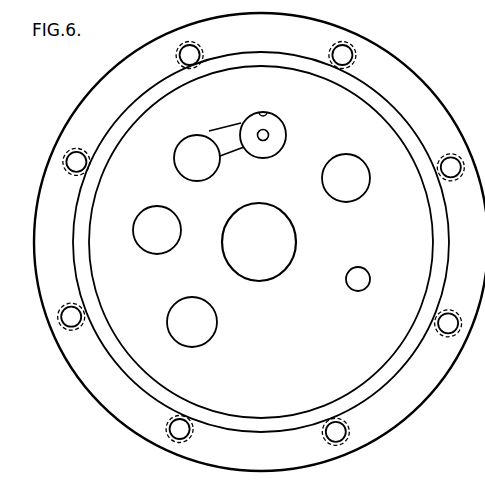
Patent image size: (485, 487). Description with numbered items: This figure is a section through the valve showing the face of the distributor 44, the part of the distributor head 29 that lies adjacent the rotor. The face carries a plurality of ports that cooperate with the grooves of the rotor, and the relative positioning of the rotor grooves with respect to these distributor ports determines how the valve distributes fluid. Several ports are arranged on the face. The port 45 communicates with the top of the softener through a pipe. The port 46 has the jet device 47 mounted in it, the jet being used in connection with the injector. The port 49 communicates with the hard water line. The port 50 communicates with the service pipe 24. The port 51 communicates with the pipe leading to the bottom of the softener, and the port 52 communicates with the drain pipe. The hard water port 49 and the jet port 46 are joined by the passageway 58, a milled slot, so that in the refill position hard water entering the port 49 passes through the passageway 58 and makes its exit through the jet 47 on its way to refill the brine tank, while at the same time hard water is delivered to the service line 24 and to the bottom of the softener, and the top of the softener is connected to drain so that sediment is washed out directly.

The distributor head 29 is at (434, 89).
The distributor 44 is at (363, 249).
The port 45 is at (363, 176).
The port 46 is at (272, 104).
The jet device 47 is at (276, 134).
The port 49 is at (178, 157).
The port 50 is at (136, 236).
The port 51 is at (202, 334).
The port 52 is at (370, 276).
The passageway 58 is at (219, 131).
The service pipe 24 is at (483, 338).